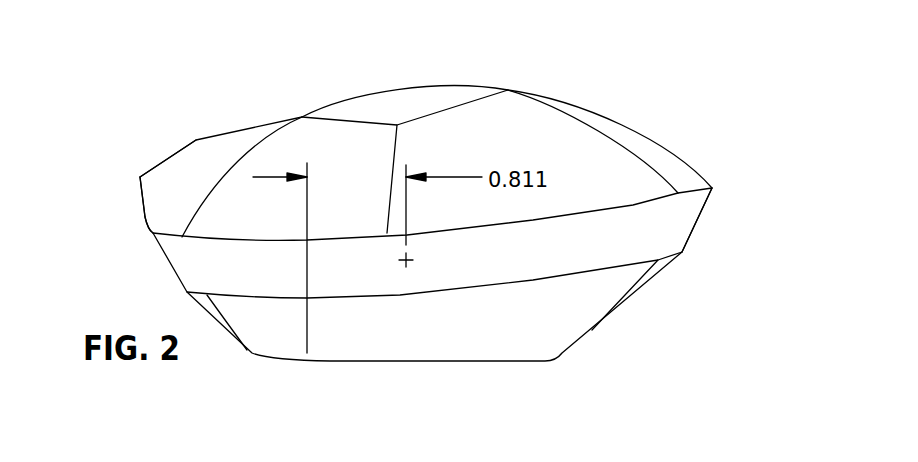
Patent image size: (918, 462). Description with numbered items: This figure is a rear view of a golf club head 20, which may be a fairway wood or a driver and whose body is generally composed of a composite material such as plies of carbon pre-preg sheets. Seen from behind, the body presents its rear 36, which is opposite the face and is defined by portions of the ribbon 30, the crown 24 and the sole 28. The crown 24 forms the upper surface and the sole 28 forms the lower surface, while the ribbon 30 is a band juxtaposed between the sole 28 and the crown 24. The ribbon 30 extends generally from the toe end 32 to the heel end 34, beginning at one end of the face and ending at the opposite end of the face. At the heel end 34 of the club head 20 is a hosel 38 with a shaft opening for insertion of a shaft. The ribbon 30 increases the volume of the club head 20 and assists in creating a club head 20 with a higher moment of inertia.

The golf club head 20 is at (678, 120).
The crown 24 is at (553, 128).
The sole 28 is at (477, 350).
The ribbon 30 is at (685, 225).
The toe end 32 is at (720, 167).
The heel end 34 is at (118, 230).
The rear 36 is at (600, 92).
The hosel 38 is at (170, 157).